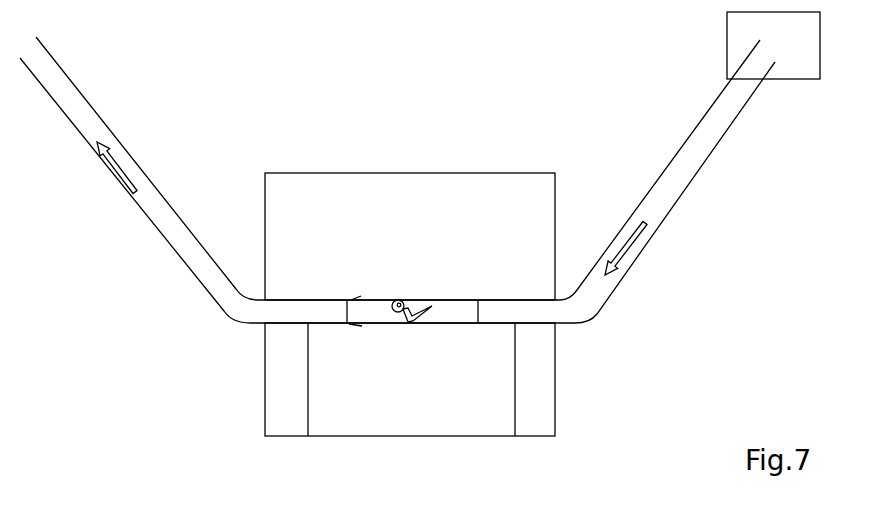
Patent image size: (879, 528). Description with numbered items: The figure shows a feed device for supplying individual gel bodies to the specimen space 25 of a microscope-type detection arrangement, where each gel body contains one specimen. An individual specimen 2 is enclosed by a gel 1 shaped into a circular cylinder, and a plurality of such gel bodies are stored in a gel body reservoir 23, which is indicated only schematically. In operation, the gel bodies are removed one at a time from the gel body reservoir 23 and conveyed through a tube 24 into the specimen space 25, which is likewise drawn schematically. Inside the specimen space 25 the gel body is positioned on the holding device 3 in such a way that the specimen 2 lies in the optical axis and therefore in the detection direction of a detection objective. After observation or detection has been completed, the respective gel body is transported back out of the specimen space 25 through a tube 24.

The gel 1 is at (463, 318).
The specimen 2 is at (400, 298).
The holding device 3 is at (387, 407).
The gel body reservoir 23 is at (735, 52).
The tube 24 is at (200, 272).
The specimen space 25 is at (453, 205).